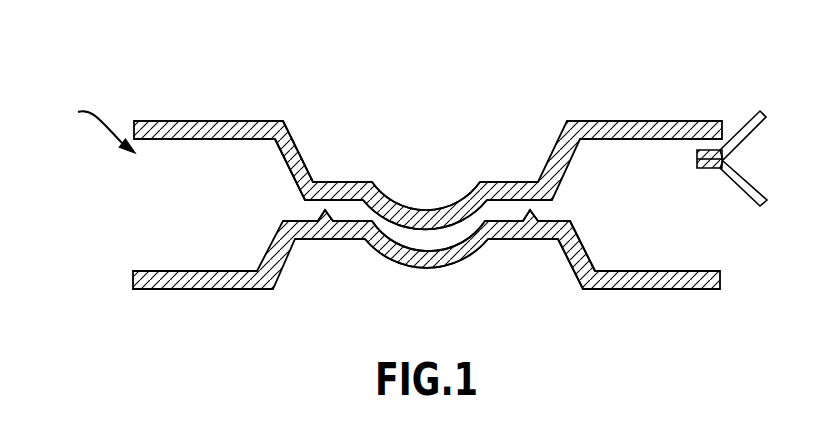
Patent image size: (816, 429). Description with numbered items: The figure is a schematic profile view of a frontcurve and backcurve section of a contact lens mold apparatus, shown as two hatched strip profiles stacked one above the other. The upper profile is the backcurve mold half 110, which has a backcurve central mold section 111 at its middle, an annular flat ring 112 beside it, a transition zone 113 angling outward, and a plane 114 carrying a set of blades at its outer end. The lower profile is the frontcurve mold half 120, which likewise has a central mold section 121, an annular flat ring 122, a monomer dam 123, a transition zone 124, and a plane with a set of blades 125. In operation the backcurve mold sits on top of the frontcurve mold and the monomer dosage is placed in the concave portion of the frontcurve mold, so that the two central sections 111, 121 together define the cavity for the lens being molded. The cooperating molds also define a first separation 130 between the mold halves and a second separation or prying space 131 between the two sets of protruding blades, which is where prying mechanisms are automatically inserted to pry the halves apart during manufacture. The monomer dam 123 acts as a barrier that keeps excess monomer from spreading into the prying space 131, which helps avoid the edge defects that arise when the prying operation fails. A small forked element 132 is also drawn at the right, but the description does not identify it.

The backcurve mold half 110 is at (645, 120).
The backcurve central mold section 111 is at (417, 210).
The annular flat ring 112 is at (343, 182).
The transition zone 113 is at (303, 152).
The plane with plurality of blades 114 is at (213, 120).
The frontcurve mold half 120 is at (133, 280).
The central mold section 121 is at (415, 267).
The annular flat ring 122 is at (503, 240).
The monomer dam 123 is at (530, 240).
The transition zone 124 is at (583, 245).
The plane with plurality of blades 125 is at (203, 290).
The first separation 130 is at (533, 212).
The prying space 131 is at (85, 124).
The forked guide tab 132 is at (765, 205).